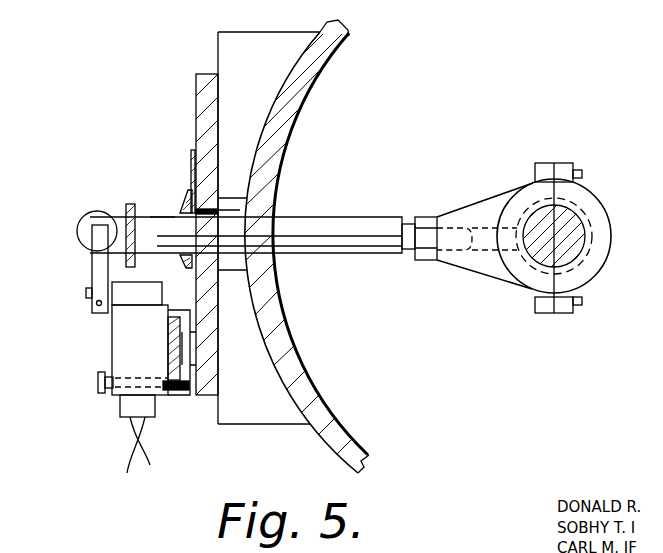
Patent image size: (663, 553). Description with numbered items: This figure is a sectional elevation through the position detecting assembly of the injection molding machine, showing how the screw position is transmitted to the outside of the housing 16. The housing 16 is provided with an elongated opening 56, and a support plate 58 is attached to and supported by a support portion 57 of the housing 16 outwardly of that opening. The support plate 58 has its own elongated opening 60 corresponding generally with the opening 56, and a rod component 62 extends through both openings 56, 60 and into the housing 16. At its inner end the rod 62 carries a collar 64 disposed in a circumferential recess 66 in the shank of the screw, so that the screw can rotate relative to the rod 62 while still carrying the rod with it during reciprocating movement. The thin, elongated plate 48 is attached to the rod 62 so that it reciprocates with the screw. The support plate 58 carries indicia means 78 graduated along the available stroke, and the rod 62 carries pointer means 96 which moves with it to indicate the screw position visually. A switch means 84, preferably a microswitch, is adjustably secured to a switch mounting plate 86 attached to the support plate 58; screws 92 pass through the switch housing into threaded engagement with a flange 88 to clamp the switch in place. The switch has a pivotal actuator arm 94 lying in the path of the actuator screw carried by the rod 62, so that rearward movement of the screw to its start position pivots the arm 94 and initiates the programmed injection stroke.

The housing 16 is at (316, 24).
The support portion 57 is at (218, 32).
The support plate 58 is at (208, 76).
The elongated opening 56 is at (255, 262).
The indicia means 78 is at (192, 150).
The pointer means 96 is at (186, 188).
The rod component 62 is at (157, 215).
The thin elongated plate 48 is at (128, 205).
The elongated opening 60 is at (213, 220).
The collar 64 is at (602, 184).
The circumferential recess 66 is at (593, 217).
The pivotal actuator arm 94 is at (90, 262).
The switch means 84 is at (101, 335).
The switch mounting plate 86 is at (173, 348).
The flange 88 is at (178, 397).
The screws 92 is at (102, 395).